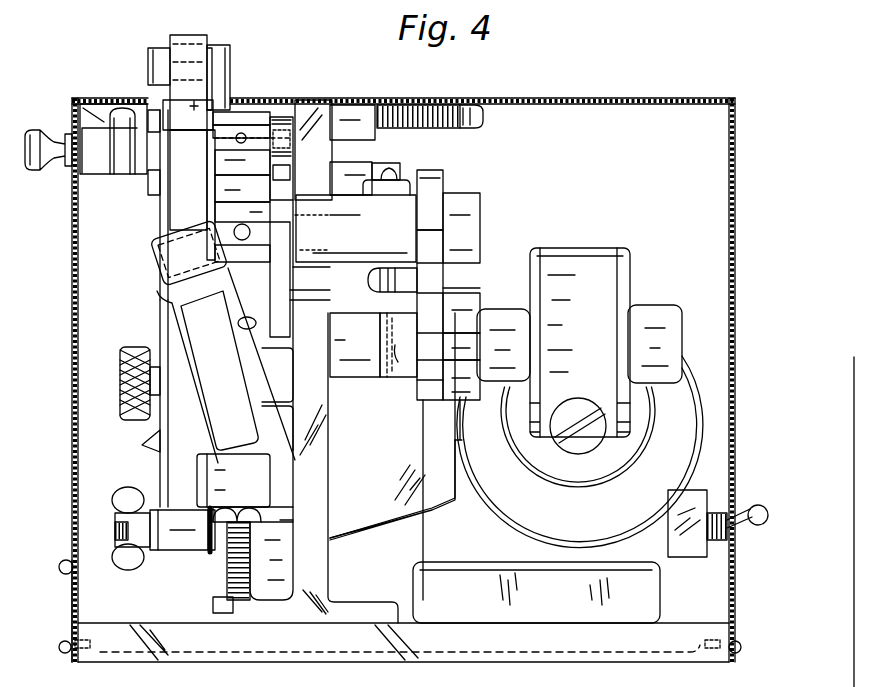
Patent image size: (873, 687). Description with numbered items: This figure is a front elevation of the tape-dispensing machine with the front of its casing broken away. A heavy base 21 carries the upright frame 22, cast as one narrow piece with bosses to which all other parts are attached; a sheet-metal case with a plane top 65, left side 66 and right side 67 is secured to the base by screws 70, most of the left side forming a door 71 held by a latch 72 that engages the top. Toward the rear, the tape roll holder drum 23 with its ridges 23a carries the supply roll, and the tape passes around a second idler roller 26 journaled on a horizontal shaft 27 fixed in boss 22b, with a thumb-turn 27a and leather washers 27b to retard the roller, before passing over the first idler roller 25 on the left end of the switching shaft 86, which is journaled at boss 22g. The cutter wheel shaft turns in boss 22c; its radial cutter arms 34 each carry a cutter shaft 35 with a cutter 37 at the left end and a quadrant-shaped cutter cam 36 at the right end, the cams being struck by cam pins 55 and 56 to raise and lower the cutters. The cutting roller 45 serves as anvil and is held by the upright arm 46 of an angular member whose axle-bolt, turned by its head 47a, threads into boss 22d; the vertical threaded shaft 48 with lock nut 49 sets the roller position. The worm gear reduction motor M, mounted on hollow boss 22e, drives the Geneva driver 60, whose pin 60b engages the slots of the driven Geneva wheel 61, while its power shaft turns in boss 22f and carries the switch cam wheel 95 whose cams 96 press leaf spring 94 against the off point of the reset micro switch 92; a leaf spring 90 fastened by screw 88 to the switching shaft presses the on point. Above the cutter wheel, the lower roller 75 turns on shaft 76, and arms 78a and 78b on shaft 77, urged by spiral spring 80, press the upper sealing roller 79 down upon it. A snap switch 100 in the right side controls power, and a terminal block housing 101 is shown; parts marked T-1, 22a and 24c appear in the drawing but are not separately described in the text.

The terminal bracket T-1 is at (186, 36).
The upper sealing roller 79 is at (210, 44).
The roller arm 78a is at (148, 54).
The roller arm 78b is at (231, 54).
The latch 72 is at (118, 108).
The shaft 76 is at (155, 112).
The cutter 37 is at (140, 232).
The cutter shaft 35 is at (188, 173).
The lower roller 75 is at (214, 102).
The frame plate 22a is at (357, 107).
The upright frame 22 is at (308, 124).
The roller arm shaft 77 is at (470, 104).
The casing top 65 is at (566, 101).
The right side of casing 67 is at (736, 268).
The door 71 is at (72, 288).
The left side of casing 66 is at (70, 624).
The screws 70 is at (60, 650).
The base 21 is at (530, 640).
The cutter cam pin 56 is at (293, 134).
The cutter cam pin 55 is at (293, 157).
The cutter cam 36 is at (282, 178).
The boss 22g is at (350, 167).
The leaf spring 90 is at (395, 172).
The screw 88 is at (404, 185).
The spiral spring 80 is at (457, 130).
The boss 22c is at (407, 217).
The switching shaft 86 is at (148, 186).
The idler roller 25 is at (160, 200).
The cutting roller 45 is at (150, 244).
The cutter arm 34 is at (258, 145).
The reset micro switch 92 is at (386, 190).
The upwardly extending arm 46 is at (194, 330).
The leaf spring 94 is at (387, 292).
The driven Geneva wheel 61 is at (443, 281).
The knurled knob 24c is at (128, 355).
The switch cam wheel 95 is at (382, 333).
The cams 96 is at (408, 347).
The boss 22f is at (349, 365).
The pin 60b is at (430, 350).
The Geneva driver 60 is at (440, 400).
The ridges 23a is at (145, 442).
The tape roll holder drum 23 is at (160, 472).
The second idler roller 26 is at (172, 522).
The thumb-turn 27a is at (138, 526).
The horizontal shaft 27 is at (115, 534).
The leather washers 27b is at (213, 552).
The axle-bolt head 47a is at (208, 491).
The lock nut 49 is at (287, 535).
The boss 22b is at (273, 535).
The vertical threaded shaft 48 is at (240, 596).
The boss 22d is at (283, 483).
The hollow boss 22e is at (367, 513).
The worm gear reduction motor M is at (520, 527).
The snap switch 100 is at (683, 547).
The terminal block housing 101 is at (638, 604).